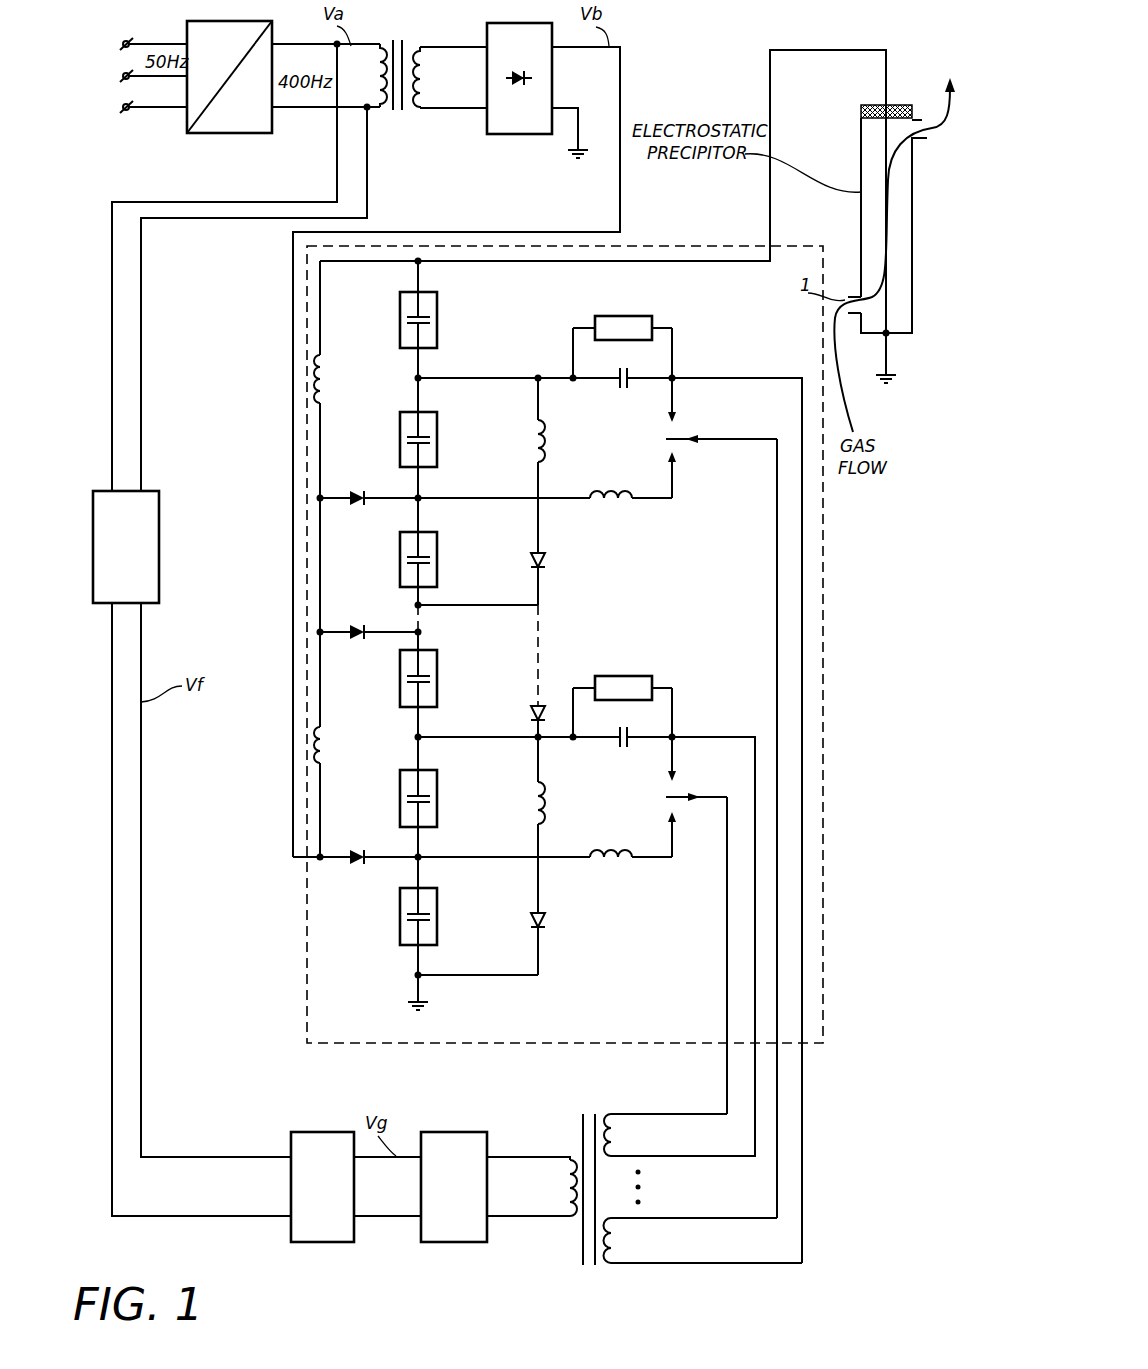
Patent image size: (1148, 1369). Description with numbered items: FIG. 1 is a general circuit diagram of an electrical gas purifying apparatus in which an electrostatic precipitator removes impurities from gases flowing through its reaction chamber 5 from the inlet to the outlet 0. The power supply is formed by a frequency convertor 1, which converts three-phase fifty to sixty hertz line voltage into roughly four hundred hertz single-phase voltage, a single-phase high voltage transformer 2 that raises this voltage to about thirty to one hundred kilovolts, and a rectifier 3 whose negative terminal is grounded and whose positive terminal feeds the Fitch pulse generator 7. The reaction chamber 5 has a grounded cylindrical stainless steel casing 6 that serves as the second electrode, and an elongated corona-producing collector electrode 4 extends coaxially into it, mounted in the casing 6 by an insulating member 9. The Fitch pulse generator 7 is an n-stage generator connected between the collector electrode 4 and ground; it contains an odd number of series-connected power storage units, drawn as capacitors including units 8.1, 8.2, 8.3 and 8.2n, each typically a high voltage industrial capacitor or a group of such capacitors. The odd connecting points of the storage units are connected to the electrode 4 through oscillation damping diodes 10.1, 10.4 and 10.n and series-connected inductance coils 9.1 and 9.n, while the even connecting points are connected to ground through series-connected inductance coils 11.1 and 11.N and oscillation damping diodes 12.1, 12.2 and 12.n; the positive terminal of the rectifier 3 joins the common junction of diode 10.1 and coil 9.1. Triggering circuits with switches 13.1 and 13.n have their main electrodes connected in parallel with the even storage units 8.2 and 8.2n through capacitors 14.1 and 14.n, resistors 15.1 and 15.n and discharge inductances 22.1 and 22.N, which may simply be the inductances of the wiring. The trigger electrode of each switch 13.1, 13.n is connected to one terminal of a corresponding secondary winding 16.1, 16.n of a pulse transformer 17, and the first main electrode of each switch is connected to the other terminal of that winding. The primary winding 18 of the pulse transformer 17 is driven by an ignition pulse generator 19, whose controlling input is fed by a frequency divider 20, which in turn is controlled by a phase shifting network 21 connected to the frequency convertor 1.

The frequency convertor 1 is at (232, 20).
The single-phase high voltage transformer 2 is at (397, 44).
The rectifier 3 is at (516, 142).
The corona-producing collector electrode 4 is at (885, 140).
The reaction chamber 5 is at (896, 127).
The grounded cylindrical casing 6 is at (915, 318).
The Fitch pulse generator 7 is at (298, 1046).
The insulating member 9 is at (870, 105).
The outlet 0 is at (927, 138).
The power storage unit 8.2n is at (437, 413).
The power storage unit 8.3 is at (437, 651).
The power storage unit 8.2 is at (437, 771).
The power storage unit 8.1 is at (437, 889).
The inductance coil 9.n is at (330, 378).
The inductance coil 9.1 is at (330, 739).
The oscillation damping diode 10.n is at (357, 491).
The oscillation damping diode 10.4 is at (357, 625).
The oscillation damping diode 10.1 is at (357, 850).
The inductance coil 11.N is at (548, 438).
The inductance coil 11.1 is at (548, 790).
The oscillation damping diode 12.n is at (547, 560).
The oscillation damping diode 12.2 is at (530, 713).
The oscillation damping diode 12.1 is at (547, 913).
The switch 13.n is at (676, 436).
The switch 13.1 is at (676, 796).
The capacitor 14.n is at (622, 391).
The capacitor 14.1 is at (622, 750).
The resistor 15.n is at (620, 316).
The resistor 15.1 is at (620, 676).
The secondary winding 16.1 is at (620, 1128).
The secondary winding 16.n is at (620, 1236).
The pulse transformer 17 is at (586, 1112).
The primary winding 18 is at (560, 1190).
The ignition pulse generator 19 is at (457, 1132).
The frequency divider 20 is at (343, 1132).
The phase shifting network 21 is at (100, 491).
The discharge inductance 22.N is at (611, 494).
The discharge inductance 22.1 is at (611, 853).